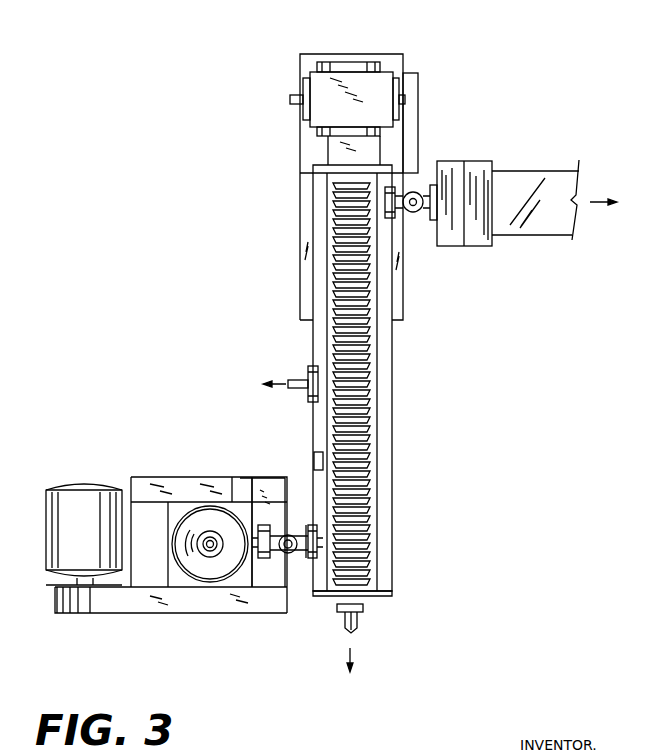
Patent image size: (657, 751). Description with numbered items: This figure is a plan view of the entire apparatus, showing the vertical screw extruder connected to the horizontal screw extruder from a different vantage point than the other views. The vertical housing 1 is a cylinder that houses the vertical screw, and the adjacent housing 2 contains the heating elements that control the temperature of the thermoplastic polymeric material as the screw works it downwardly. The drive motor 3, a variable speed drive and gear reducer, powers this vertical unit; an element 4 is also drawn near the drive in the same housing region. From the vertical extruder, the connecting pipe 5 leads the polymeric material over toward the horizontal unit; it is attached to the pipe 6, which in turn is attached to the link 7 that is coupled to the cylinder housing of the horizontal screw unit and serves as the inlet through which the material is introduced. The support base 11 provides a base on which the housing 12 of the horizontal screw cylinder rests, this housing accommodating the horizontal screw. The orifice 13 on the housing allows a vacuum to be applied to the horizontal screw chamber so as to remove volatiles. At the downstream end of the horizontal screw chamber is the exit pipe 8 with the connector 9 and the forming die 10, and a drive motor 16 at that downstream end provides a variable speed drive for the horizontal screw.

The vertical housing 1 is at (243, 584).
The housing 2 is at (176, 604).
The drive motor 3 is at (73, 497).
The drive wheel 4 is at (200, 517).
The connecting pipe 5 is at (253, 480).
The pipe 6 is at (290, 532).
The link 7 is at (313, 560).
The exit pipe 8 is at (383, 184).
The connector 9 is at (413, 214).
The forming die 10 is at (483, 172).
The support base 11 is at (300, 176).
The housing 12 is at (393, 389).
The orifice 13 is at (362, 609).
The drive motor 16 is at (368, 80).